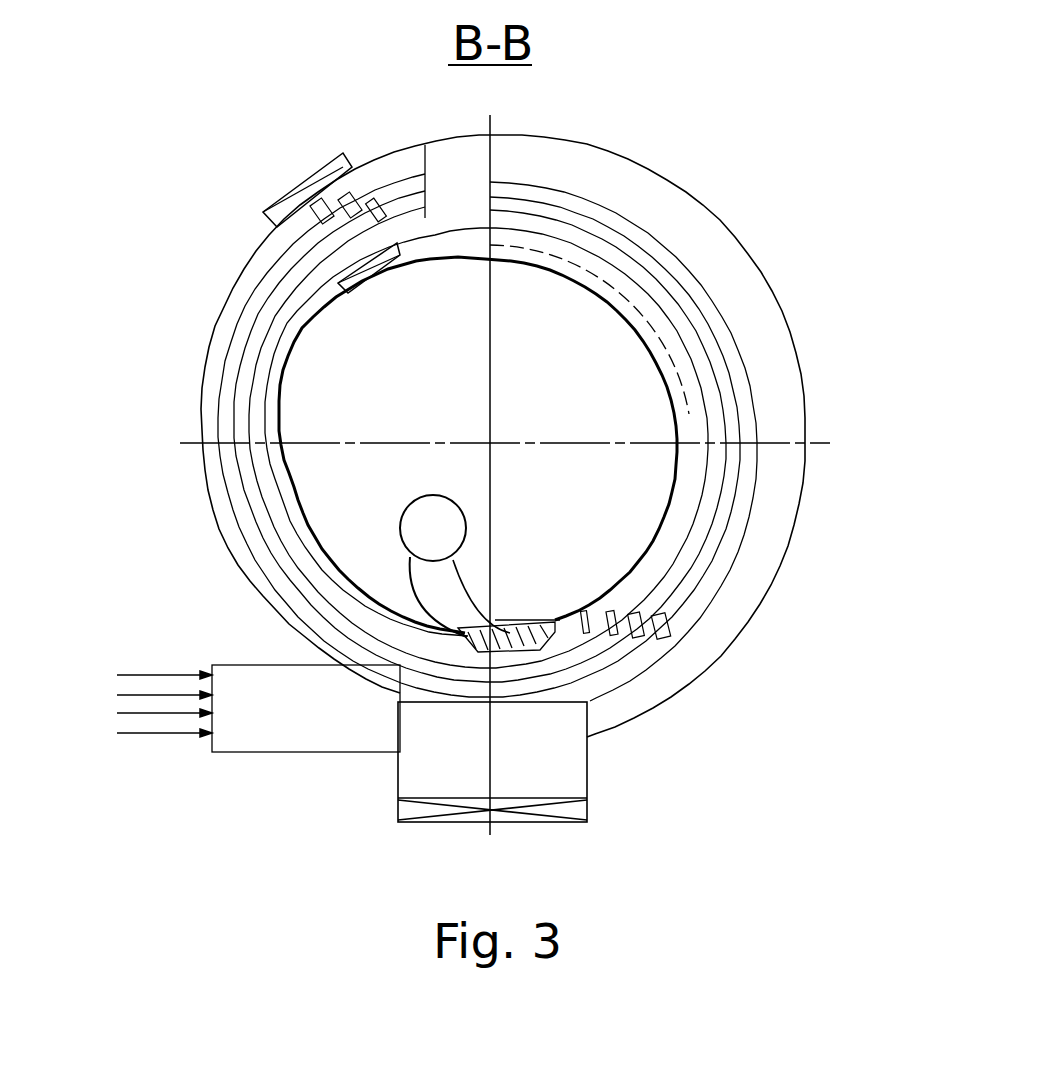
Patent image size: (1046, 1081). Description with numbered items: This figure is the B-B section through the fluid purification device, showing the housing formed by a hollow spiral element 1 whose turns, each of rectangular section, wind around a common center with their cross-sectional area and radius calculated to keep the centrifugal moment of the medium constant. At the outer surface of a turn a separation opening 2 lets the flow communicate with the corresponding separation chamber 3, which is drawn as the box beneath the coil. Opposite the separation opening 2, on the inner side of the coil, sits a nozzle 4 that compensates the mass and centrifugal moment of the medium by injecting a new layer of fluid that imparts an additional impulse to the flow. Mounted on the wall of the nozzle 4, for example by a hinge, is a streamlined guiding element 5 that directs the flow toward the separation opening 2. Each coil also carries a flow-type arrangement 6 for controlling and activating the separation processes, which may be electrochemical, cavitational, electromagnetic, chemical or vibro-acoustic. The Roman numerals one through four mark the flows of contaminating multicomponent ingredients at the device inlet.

The hollow spiral element 1 is at (215, 385).
The separation opening 2 is at (490, 703).
The separation chamber 3 is at (560, 767).
The nozzle 4 is at (440, 582).
The guiding element 5 is at (493, 635).
The flow-type arrangement 6 is at (350, 282).